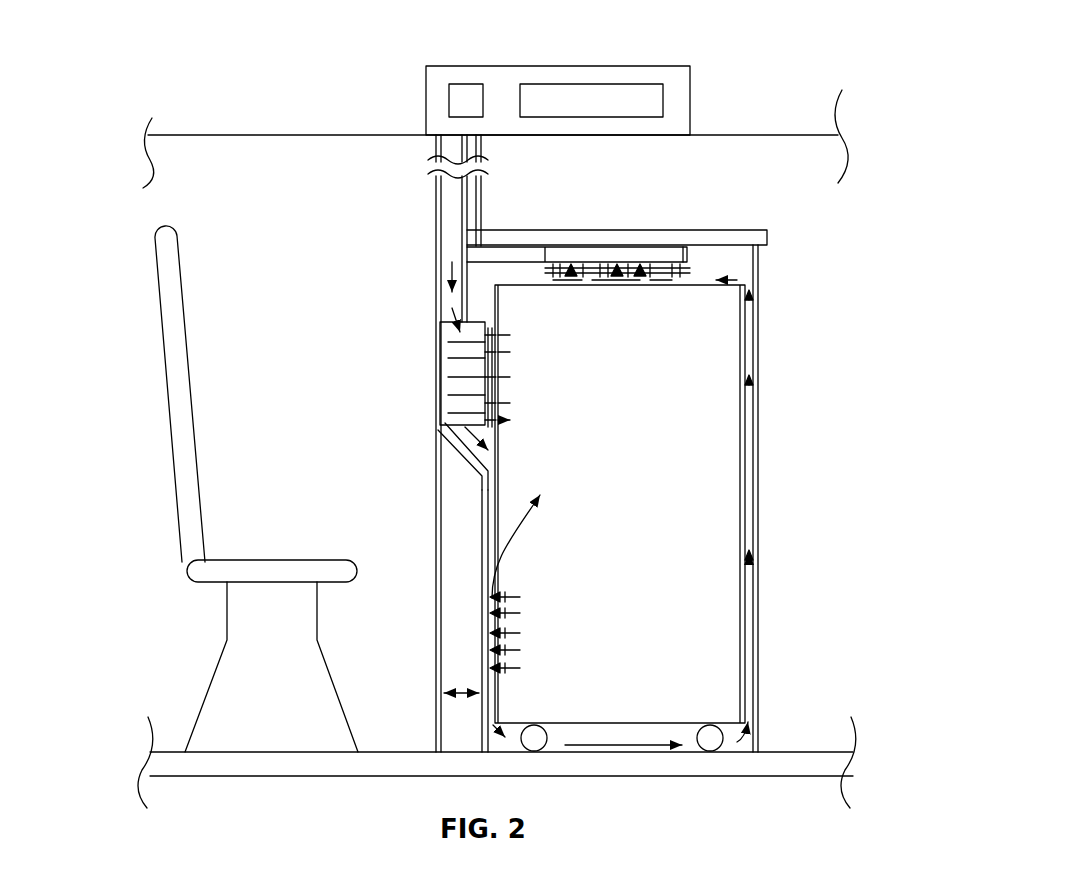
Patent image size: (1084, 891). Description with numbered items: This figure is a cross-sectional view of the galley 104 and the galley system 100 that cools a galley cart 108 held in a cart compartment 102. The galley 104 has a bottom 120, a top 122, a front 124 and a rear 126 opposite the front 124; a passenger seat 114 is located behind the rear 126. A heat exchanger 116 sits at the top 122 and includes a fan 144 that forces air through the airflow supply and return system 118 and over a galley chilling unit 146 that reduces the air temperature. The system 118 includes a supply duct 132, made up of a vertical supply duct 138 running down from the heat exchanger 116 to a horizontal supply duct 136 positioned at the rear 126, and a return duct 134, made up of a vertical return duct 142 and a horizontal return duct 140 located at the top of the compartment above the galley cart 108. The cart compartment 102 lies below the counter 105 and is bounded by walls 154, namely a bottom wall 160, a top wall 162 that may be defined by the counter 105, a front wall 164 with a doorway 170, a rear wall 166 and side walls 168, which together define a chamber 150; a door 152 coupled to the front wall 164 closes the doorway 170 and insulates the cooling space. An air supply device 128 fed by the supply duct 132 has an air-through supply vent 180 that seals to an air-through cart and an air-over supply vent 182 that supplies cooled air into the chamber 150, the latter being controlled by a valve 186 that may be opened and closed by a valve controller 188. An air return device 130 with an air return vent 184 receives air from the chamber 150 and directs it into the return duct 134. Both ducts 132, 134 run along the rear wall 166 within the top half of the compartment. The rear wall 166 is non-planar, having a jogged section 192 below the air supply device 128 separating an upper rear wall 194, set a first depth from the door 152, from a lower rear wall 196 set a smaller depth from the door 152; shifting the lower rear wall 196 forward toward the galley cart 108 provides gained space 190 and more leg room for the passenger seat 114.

The galley system 100 is at (773, 72).
The cart compartment 102 is at (750, 515).
The galley 104 is at (795, 230).
The counter 105 is at (720, 235).
The galley cart 108 is at (748, 382).
The passenger seat 114 is at (178, 452).
The heat exchanger 116 is at (638, 72).
The airflow supply and return system 118 is at (430, 236).
The bottom 120 is at (552, 755).
The top 122 is at (668, 137).
The front 124 is at (760, 585).
The rear 126 is at (440, 330).
The air supply device 128 is at (452, 383).
The air return device 130 is at (604, 242).
The supply duct 132 is at (440, 242).
The return duct 134 is at (503, 258).
The horizontal supply duct 136 is at (448, 344).
The vertical supply duct 138 is at (438, 255).
The horizontal return duct 140 is at (527, 257).
The vertical return duct 142 is at (468, 217).
The fan 144 is at (469, 84).
The galley chilling unit 146 is at (565, 84).
The chamber 150 is at (645, 735).
The door 152 is at (758, 490).
The walls 154 is at (481, 718).
The bottom wall 160 is at (748, 752).
The top wall 162 is at (708, 258).
The front wall 164 is at (748, 282).
The rear wall 166 is at (490, 498).
The side wall 168 is at (697, 263).
The doorway 170 is at (764, 300).
The air-through supply vent 180 is at (500, 330).
The air-over supply vent 182 is at (500, 453).
The air return vent 184 is at (630, 272).
The valve 186 is at (478, 440).
The valve controller 188 is at (445, 428).
The gained space 190 is at (462, 700).
The jogged section 192 is at (480, 480).
The upper rear wall 194 is at (437, 366).
The lower rear wall 196 is at (482, 576).